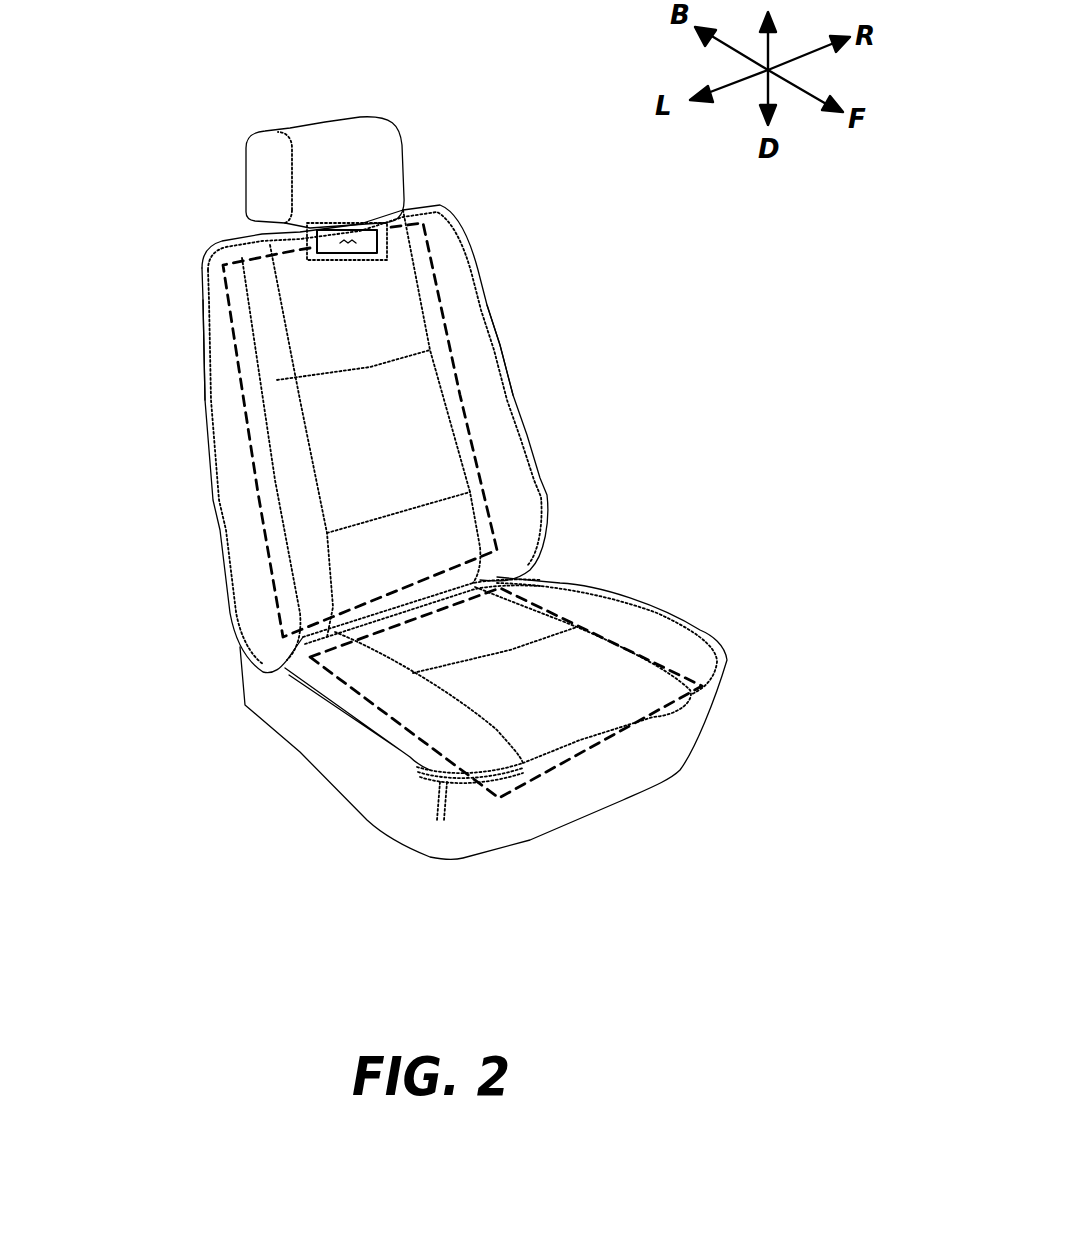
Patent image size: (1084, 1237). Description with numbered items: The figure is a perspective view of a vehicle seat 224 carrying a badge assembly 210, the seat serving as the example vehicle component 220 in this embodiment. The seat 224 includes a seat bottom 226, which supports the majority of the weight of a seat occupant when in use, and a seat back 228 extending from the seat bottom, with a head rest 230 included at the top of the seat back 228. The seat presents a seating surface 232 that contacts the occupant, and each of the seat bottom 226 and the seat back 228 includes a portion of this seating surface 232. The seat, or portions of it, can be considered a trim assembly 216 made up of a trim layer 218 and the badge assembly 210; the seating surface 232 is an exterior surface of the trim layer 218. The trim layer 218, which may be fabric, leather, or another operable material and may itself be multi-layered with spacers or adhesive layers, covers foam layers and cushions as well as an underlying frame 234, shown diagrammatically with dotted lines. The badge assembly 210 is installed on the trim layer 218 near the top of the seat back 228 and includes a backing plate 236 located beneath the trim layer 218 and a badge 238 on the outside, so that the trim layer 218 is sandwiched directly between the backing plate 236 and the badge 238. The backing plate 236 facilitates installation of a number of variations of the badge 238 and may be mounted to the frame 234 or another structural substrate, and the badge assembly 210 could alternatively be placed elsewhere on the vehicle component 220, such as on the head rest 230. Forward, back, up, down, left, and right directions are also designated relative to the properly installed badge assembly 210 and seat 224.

The badge assembly 210 is at (362, 227).
The trim assembly 216 is at (277, 345).
The trim layer 218 is at (300, 410).
The vehicle component 220 is at (552, 234).
The vehicle seat 224 is at (634, 261).
The seat bottom 226 is at (600, 615).
The seat back 228 is at (480, 372).
The head rest 230 is at (375, 138).
The seating surface 232 is at (615, 707).
The frame 234 is at (228, 298).
The backing plate 236 is at (307, 241).
The badge 238 is at (333, 233).